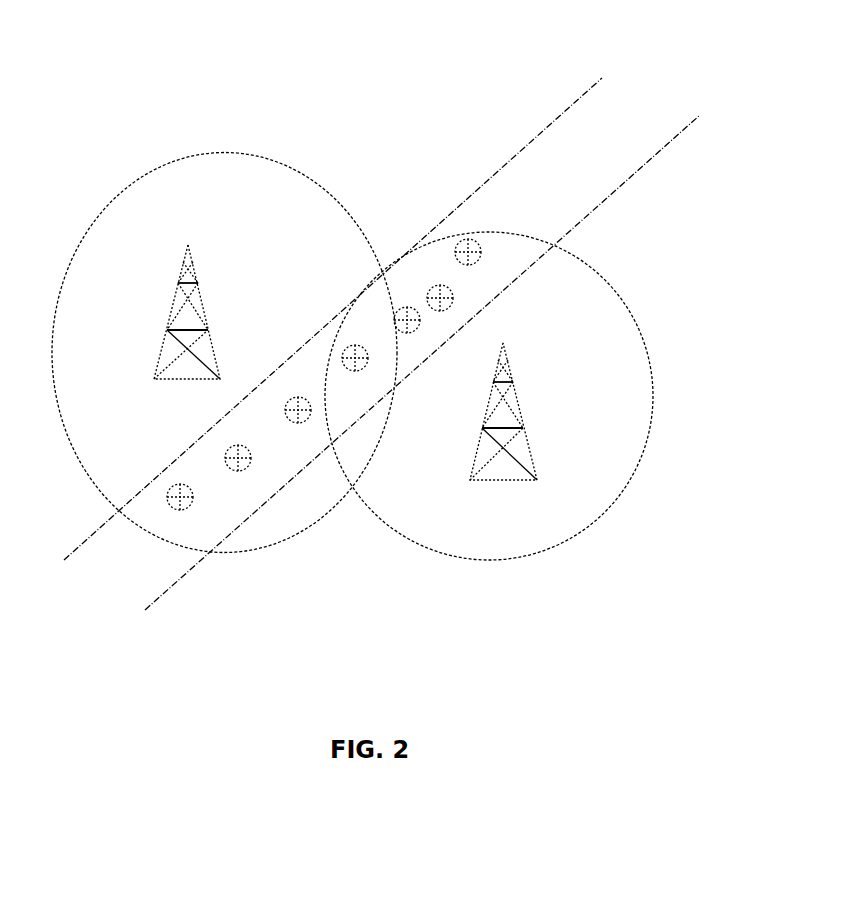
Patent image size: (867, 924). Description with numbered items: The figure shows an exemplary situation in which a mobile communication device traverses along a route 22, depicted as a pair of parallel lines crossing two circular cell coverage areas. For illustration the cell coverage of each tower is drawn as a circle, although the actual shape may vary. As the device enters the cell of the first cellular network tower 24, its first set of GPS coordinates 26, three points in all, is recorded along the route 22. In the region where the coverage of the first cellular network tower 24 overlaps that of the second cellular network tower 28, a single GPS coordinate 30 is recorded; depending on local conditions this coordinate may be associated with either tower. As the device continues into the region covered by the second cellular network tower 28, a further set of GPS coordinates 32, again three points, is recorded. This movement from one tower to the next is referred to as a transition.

The route 22 is at (632, 82).
The first cellular network tower 24 is at (537, 402).
The GPS coordinates g8, g9, g10 26 is at (400, 317).
The second cellular network tower 28 is at (162, 275).
The GPS coordinate g11 30 is at (352, 371).
The GPS coordinates g12, g13, g14 32 is at (172, 509).